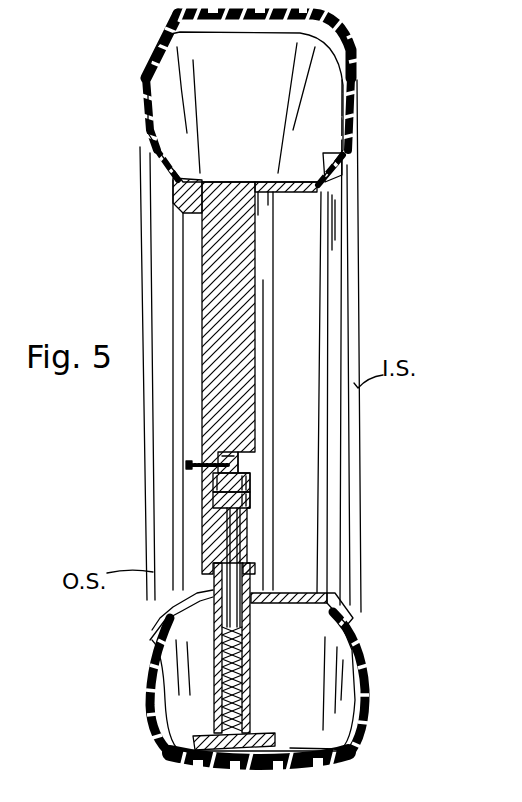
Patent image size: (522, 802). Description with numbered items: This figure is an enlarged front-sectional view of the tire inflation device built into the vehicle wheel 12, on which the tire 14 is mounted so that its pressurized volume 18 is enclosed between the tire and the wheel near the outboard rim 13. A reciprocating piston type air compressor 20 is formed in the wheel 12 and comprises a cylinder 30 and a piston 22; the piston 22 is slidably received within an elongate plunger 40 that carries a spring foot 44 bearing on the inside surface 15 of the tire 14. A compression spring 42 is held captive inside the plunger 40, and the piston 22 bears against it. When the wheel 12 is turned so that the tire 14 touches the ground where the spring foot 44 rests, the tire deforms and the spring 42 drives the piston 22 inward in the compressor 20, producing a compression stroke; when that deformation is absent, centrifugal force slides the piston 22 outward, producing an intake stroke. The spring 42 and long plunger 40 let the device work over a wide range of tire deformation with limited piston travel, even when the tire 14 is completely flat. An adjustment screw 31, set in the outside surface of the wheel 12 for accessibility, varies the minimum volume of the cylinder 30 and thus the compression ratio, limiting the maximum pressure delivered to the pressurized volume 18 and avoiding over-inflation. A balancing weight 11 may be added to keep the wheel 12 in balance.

The balancing weight 11 is at (197, 210).
The vehicle wheel 12 is at (243, 262).
The outboard rim 13 is at (282, 192).
The tire 14 is at (327, 4).
The inside surface 15 is at (300, 748).
The pressurized volume 18 is at (170, 68).
The air compressor 20 is at (213, 502).
The piston 22 is at (248, 502).
The cylinder 30 is at (247, 487).
The adjustment screw 31 is at (188, 463).
The plunger 40 is at (252, 662).
The compression spring 42 is at (252, 695).
The spring foot 44 is at (162, 731).